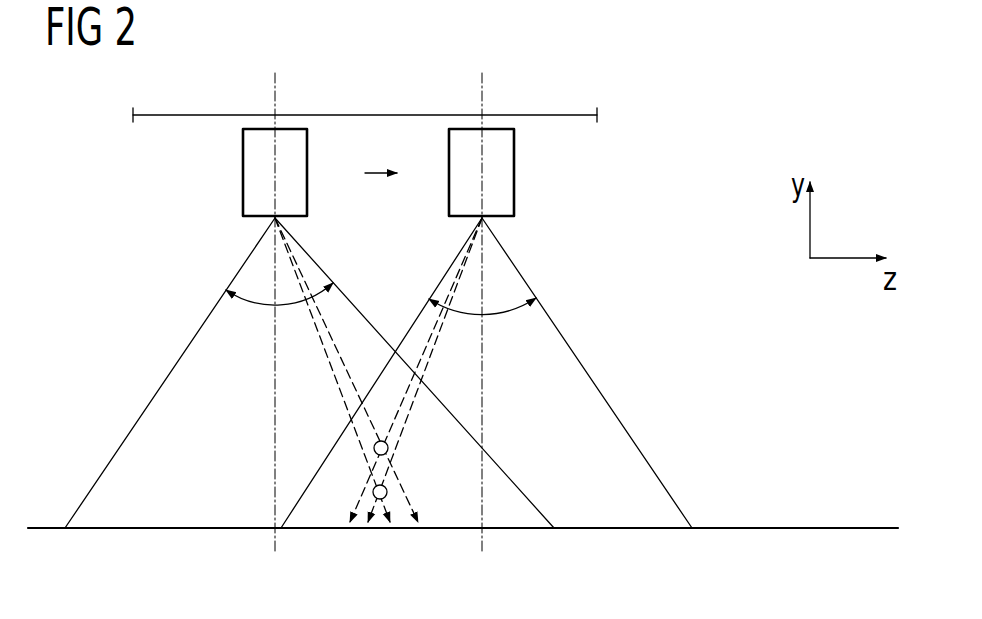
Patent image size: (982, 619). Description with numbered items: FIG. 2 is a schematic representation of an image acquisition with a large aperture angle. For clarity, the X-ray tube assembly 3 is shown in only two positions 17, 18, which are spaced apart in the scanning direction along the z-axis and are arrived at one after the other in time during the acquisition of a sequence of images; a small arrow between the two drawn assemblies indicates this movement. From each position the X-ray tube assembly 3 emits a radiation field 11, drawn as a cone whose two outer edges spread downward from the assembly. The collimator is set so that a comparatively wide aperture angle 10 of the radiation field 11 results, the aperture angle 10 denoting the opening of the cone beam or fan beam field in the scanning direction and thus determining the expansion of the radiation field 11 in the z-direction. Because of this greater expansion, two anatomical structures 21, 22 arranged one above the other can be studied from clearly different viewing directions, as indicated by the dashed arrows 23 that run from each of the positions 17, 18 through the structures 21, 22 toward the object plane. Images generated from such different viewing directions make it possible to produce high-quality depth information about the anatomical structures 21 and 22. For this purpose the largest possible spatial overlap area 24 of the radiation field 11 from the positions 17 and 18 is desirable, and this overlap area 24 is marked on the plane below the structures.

The X-ray tube assembly 3 is at (253, 155).
The aperture angle 10 is at (240, 298).
The radiation field 11 is at (165, 405).
The first position 17 is at (275, 113).
The second position 18 is at (482, 113).
The first anatomical structure 21 is at (375, 446).
The second anatomical structure 22 is at (378, 501).
The dashed arrows 23 is at (327, 327).
The spatial overlap area 24 is at (458, 508).